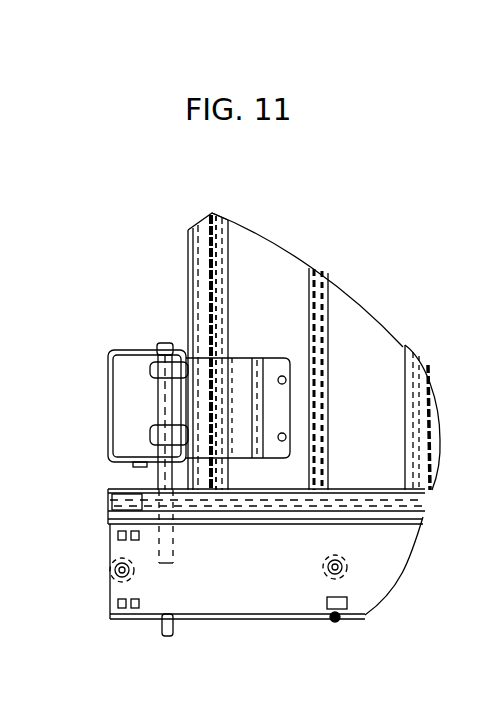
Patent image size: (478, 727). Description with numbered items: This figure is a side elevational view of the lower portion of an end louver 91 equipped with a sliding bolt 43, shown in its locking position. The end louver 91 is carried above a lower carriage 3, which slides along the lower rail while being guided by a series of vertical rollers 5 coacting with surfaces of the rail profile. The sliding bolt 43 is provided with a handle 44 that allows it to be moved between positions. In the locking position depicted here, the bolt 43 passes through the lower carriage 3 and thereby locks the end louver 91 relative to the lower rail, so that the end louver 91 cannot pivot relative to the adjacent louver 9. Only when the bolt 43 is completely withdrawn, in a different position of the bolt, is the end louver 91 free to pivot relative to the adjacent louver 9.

The lower carriage 3 is at (277, 600).
The vertical rollers 5 is at (347, 578).
The louver 9 is at (368, 328).
The end louver 91 is at (263, 252).
The sliding bolt 43 is at (162, 393).
The handle 44 is at (122, 350).